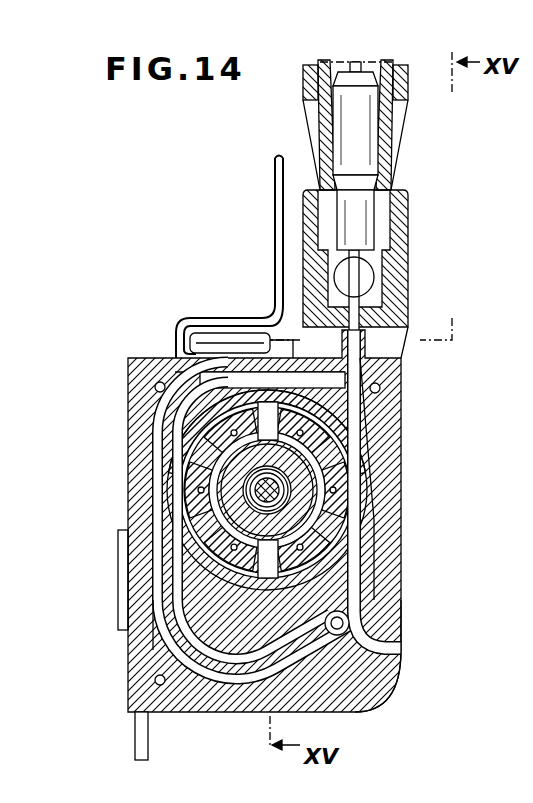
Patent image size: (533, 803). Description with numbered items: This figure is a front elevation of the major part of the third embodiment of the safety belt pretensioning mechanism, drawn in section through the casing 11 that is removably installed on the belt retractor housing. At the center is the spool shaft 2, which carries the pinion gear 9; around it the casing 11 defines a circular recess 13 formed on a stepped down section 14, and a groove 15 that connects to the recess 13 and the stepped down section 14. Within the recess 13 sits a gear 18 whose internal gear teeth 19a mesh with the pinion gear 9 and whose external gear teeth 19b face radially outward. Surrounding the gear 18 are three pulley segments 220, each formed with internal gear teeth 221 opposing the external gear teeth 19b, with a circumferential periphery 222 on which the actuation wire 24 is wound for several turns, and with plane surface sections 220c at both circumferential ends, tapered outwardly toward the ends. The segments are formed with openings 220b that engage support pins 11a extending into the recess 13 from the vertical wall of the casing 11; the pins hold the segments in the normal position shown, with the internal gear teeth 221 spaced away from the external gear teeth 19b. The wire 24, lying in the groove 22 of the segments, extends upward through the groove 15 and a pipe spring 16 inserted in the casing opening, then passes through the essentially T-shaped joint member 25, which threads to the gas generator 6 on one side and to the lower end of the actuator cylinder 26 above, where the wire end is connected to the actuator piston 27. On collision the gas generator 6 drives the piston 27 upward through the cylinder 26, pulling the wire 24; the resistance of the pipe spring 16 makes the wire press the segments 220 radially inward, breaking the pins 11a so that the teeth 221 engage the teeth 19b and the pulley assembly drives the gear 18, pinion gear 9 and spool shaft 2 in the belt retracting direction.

The spool shaft 2 is at (157, 470).
The gas generator 6 is at (370, 280).
The pinion gear 9 is at (340, 468).
The casing 11 is at (300, 492).
The support pins 11a is at (333, 500).
The recess 13 is at (197, 660).
The stepped down section 14 is at (177, 585).
The groove 15 is at (345, 380).
The pipe spring 16 is at (397, 668).
The gear 18 is at (156, 628).
The internal gear teeth 19a is at (303, 567).
The external gear teeth 19b is at (305, 480).
The groove 22 is at (350, 620).
The actuation wire 24 is at (362, 344).
The joint member 25 is at (410, 200).
The actuator cylinder 26 is at (395, 152).
The actuator piston 27 is at (372, 127).
The pulley segments 220 is at (210, 395).
The openings 220b is at (177, 350).
The plane surface section 220c is at (168, 410).
The internal gear teeth 221 is at (242, 395).
The circumferential periphery 222 is at (256, 405).